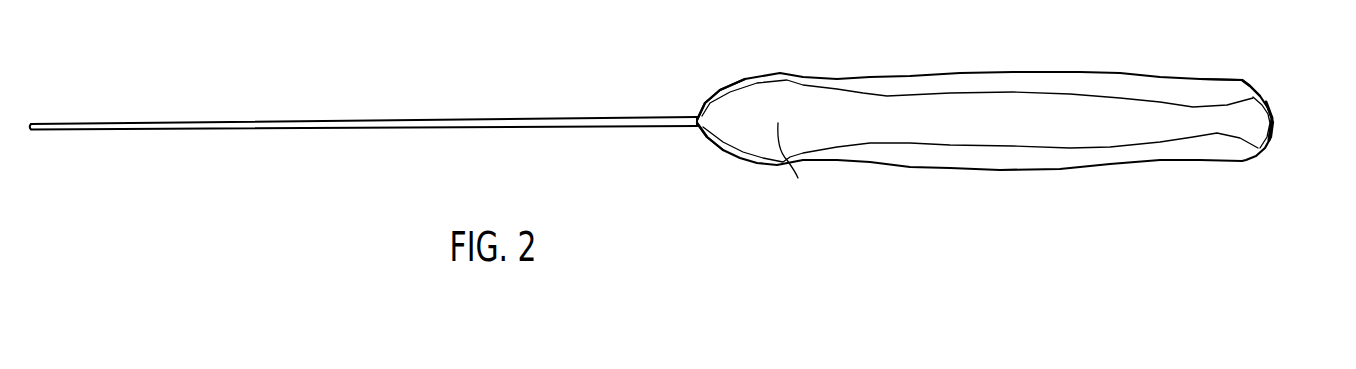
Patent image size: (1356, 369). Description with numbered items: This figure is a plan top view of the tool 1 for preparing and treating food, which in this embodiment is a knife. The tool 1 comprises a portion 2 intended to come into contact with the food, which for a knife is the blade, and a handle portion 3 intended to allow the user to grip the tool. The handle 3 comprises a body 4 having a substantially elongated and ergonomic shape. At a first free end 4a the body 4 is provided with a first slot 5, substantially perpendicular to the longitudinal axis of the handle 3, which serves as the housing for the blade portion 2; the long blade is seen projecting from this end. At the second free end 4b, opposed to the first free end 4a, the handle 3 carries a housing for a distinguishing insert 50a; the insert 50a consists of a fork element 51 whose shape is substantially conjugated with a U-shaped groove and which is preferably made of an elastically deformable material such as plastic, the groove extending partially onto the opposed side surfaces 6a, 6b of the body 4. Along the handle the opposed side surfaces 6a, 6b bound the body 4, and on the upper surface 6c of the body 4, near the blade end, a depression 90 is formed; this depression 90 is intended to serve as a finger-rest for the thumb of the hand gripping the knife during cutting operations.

The tool 1 is at (732, 195).
The portion intended to come into contact with the food 2 is at (281, 120).
The handle portion 3 is at (1017, 70).
The body 4 is at (912, 77).
The first free end 4a is at (697, 100).
The second free end 4b is at (1246, 78).
The first slot 5 is at (697, 128).
The side surface 6a is at (1100, 172).
The side surface 6b is at (1097, 72).
The upper surface 6c is at (1180, 130).
The distinguishing insert 50a is at (1276, 110).
The fork element 51 is at (1270, 142).
The depression 90 is at (798, 178).